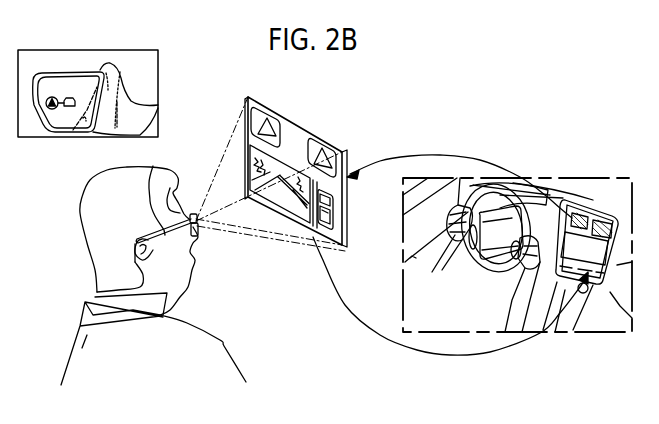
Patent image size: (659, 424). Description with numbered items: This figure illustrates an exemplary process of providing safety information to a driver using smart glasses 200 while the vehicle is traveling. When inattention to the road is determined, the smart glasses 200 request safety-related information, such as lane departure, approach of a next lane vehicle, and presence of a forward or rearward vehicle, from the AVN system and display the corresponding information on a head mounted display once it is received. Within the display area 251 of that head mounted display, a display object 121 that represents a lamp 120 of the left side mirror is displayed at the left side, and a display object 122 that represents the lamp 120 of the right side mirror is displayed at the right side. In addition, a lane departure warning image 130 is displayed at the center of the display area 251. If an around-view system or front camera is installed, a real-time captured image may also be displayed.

The lamp 120 is at (52, 97).
The smart glasses 200 is at (153, 166).
The display object 121 is at (267, 117).
The display object 122 is at (322, 146).
The lane departure warning image 130 is at (292, 192).
The display area 251 is at (275, 213).